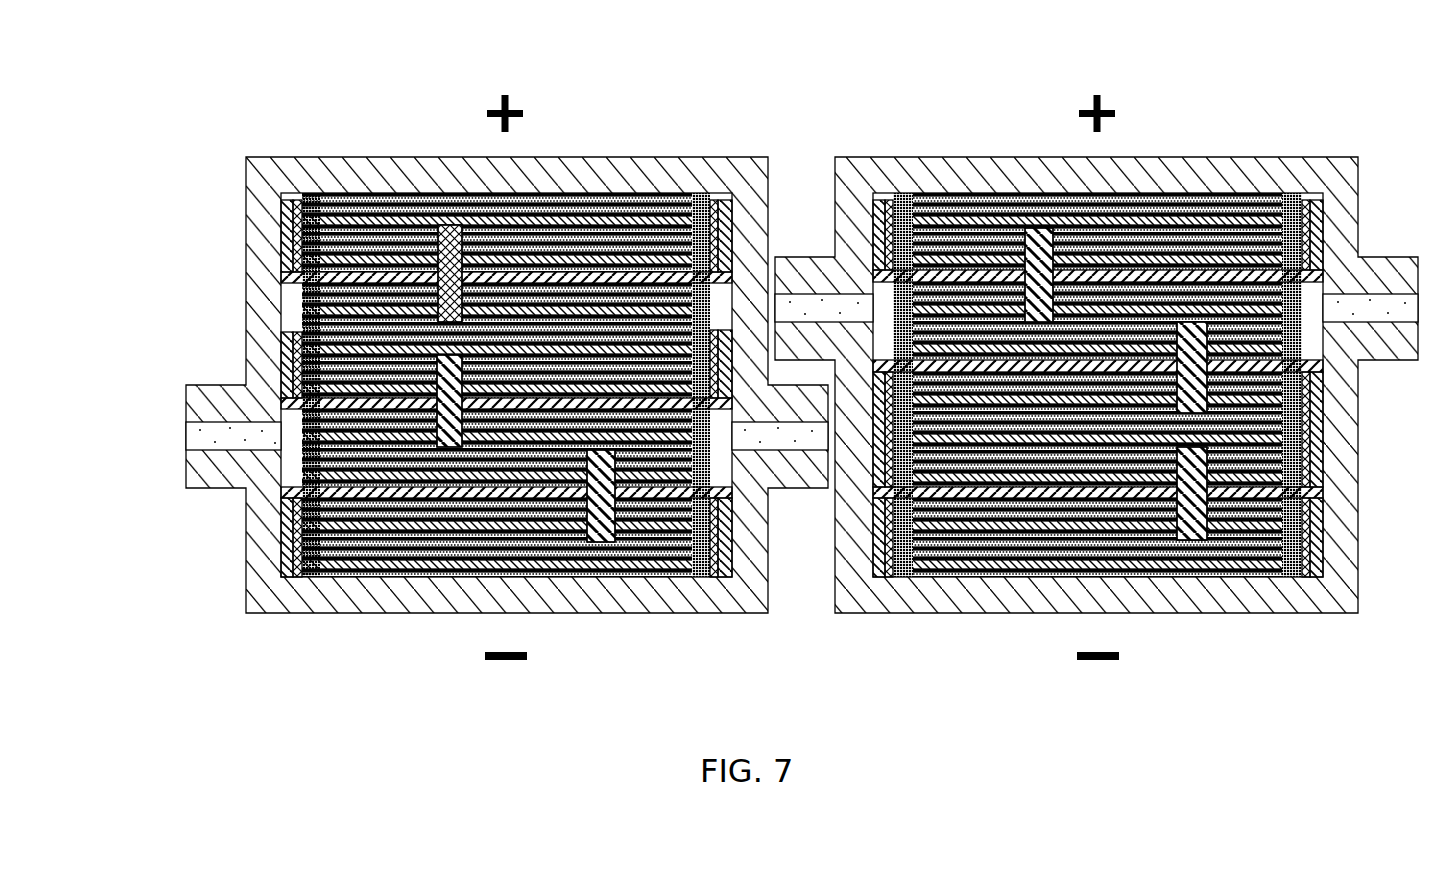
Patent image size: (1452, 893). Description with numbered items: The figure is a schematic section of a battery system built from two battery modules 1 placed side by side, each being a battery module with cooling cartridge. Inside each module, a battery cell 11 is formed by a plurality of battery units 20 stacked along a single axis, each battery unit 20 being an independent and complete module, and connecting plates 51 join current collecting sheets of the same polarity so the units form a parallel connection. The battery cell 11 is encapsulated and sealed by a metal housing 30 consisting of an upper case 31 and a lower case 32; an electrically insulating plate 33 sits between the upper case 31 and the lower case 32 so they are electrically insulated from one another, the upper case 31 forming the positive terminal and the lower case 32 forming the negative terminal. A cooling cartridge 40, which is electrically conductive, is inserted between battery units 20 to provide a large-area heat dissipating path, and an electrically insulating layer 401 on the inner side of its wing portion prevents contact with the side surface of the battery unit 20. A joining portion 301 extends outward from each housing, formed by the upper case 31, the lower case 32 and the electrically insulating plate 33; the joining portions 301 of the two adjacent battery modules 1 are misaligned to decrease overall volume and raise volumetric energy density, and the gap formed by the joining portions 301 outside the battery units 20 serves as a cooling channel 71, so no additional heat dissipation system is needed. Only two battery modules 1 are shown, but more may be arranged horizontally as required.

The battery module 1 is at (226, 110).
The battery cell 11 is at (357, 191).
The battery unit 20 is at (303, 306).
The metal housing 30 is at (115, 383).
The upper case 31 is at (186, 407).
The lower case 32 is at (186, 482).
The electrically insulating plate 33 is at (1418, 317).
The cooling cartridge 40 is at (1360, 238).
The connecting plate 51 is at (437, 200).
The cooling channel 71 is at (795, 146).
The joining portion 301 is at (798, 490).
The electrically insulating layer 401 is at (1307, 207).